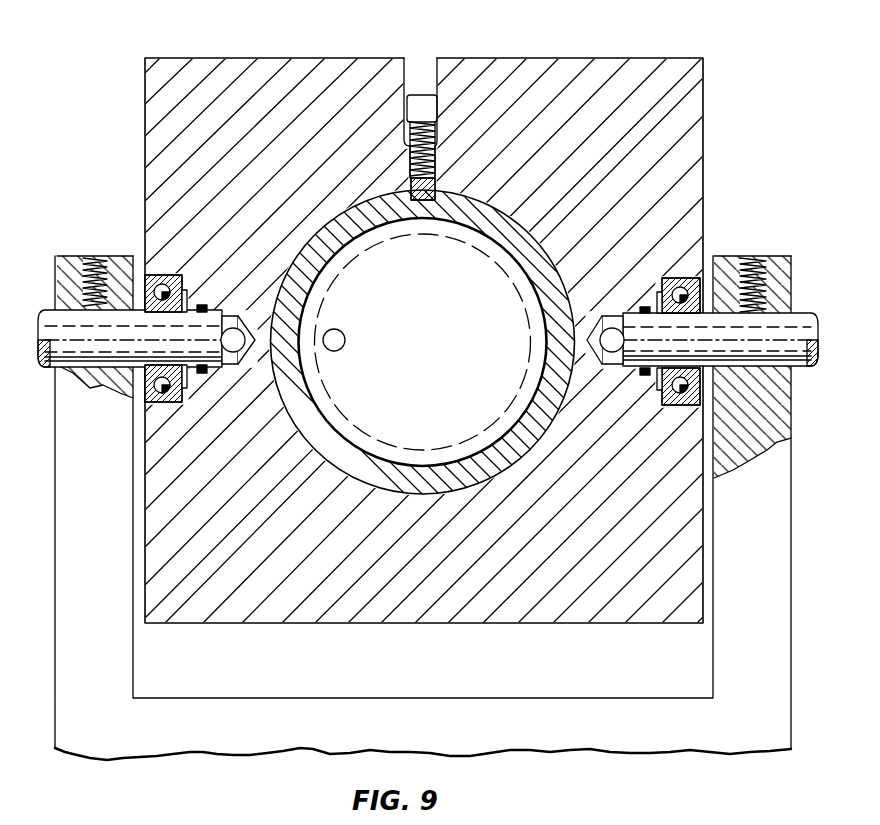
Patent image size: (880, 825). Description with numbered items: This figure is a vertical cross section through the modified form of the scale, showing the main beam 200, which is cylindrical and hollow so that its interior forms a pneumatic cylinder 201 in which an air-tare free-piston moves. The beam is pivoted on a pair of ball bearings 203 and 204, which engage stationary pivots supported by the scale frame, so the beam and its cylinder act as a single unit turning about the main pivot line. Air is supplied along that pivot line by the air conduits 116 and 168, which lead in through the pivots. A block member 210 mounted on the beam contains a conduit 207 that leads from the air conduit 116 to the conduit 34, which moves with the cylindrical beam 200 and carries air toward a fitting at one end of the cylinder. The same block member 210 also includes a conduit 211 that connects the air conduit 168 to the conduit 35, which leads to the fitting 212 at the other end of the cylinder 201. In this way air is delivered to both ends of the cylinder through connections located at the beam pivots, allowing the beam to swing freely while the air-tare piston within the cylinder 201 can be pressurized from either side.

The main beam 200 is at (272, 57).
The block member 210 is at (622, 58).
The pneumatic cylinder 201 is at (526, 234).
The fitting 212 is at (343, 336).
The ball bearing 204 is at (163, 274).
The ball bearing 203 is at (684, 277).
The conduit 211 is at (236, 319).
The conduit 35 is at (233, 352).
The conduit 207 is at (610, 320).
The conduit 34 is at (603, 354).
The air conduit 168 is at (57, 372).
The air conduit 116 is at (796, 320).